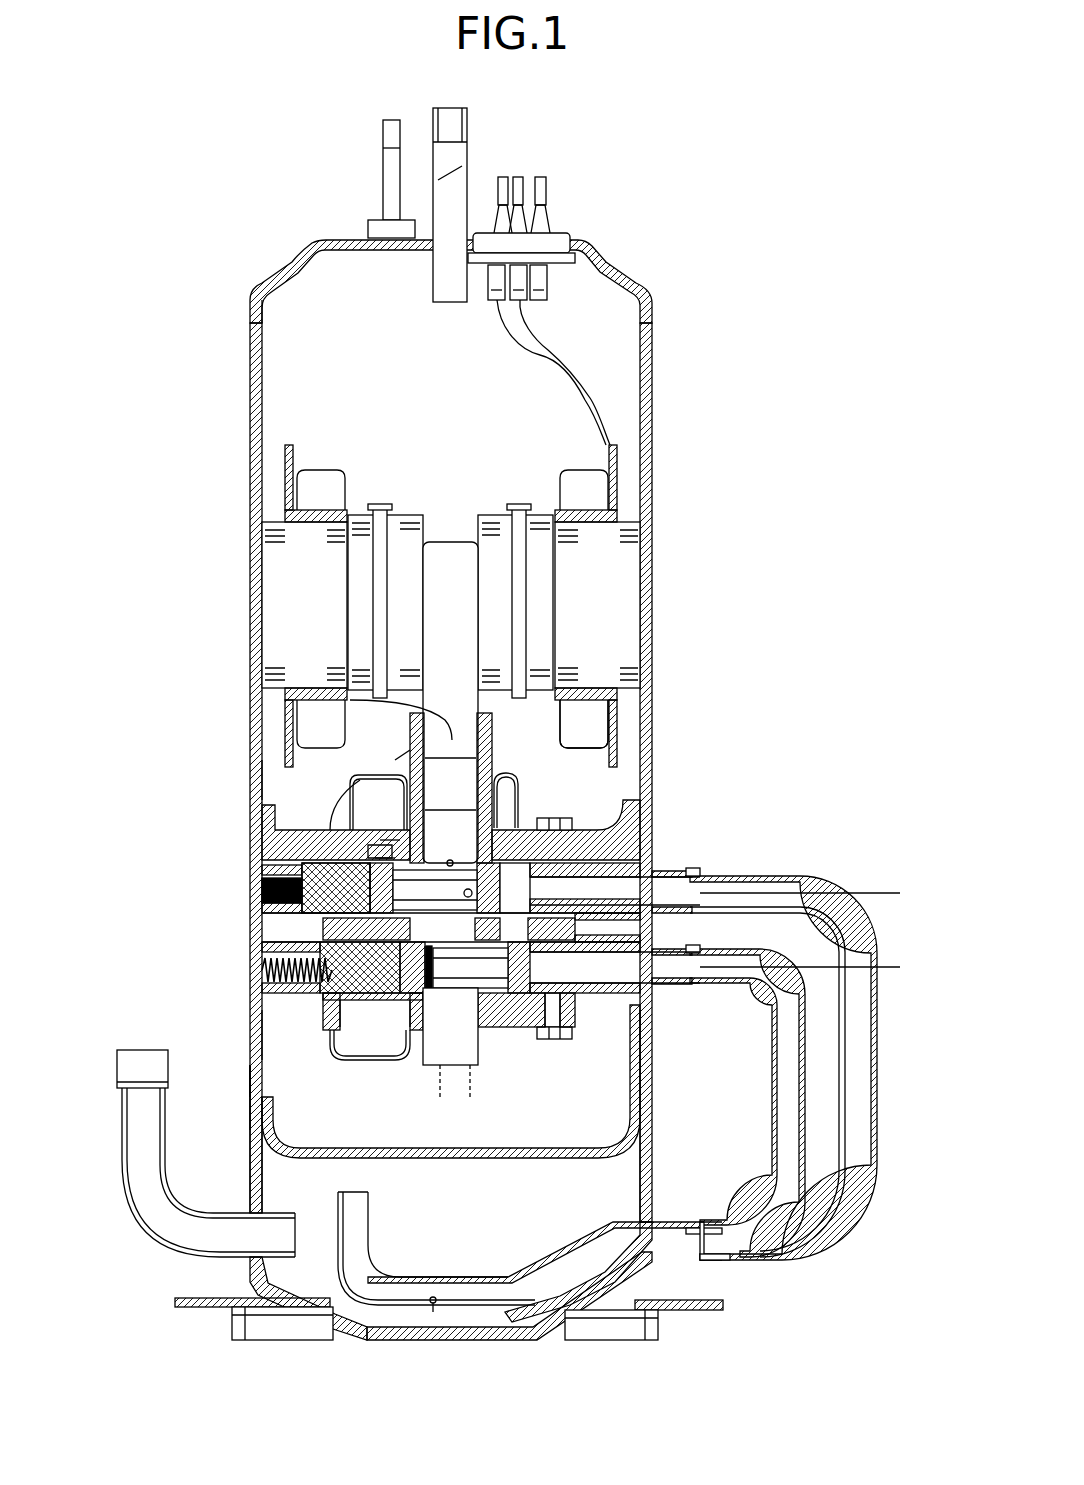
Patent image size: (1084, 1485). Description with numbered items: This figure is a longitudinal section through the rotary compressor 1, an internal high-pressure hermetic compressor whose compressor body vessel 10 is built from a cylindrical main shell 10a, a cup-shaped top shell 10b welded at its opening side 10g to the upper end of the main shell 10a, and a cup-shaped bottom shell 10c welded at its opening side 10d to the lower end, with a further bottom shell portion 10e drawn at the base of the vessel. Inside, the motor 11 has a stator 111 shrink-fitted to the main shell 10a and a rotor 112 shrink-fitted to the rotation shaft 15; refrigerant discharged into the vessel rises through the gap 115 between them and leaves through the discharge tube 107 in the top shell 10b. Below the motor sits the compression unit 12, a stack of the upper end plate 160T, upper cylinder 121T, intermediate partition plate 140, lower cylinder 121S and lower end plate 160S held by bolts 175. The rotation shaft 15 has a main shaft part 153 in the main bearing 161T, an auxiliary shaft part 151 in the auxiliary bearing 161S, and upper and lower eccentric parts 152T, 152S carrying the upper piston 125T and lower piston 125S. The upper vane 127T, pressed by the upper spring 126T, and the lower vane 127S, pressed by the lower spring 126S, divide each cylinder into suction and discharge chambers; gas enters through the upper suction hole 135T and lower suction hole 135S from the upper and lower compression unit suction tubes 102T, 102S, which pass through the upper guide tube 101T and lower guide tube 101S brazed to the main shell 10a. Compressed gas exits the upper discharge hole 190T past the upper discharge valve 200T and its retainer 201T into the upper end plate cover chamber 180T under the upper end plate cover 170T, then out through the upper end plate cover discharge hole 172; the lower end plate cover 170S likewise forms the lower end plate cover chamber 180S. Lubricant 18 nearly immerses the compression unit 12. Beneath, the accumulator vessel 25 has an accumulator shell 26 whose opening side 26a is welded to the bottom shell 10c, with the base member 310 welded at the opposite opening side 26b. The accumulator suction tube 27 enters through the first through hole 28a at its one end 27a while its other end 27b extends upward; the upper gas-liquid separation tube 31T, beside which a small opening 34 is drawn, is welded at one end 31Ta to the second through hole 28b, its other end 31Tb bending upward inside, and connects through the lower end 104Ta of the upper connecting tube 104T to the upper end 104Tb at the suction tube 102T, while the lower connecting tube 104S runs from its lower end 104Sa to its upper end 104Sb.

The rotary compressor 1 is at (574, 108).
The compressor body vessel 10 is at (250, 372).
The top shell 10b is at (318, 240).
The opening side of the top shell 10g is at (273, 325).
The discharge tube 107 is at (468, 125).
The motor 11 is at (276, 566).
The stator 111 is at (262, 540).
The rotor 112 is at (495, 607).
The rotation shaft 15 is at (450, 580).
The gap between the stator and the rotor 115 is at (556, 692).
The main shaft part 153 is at (350, 700).
The main bearing 161T is at (410, 722).
The upper end plate cover discharge hole 172 is at (395, 760).
The main shell 10a is at (262, 760).
The upper end plate cover 170T is at (350, 782).
The upper discharge valve retainer 201T is at (395, 840).
The upper discharge valve 200T is at (375, 850).
The upper discharge hole 190T is at (385, 858).
The upper eccentric part 152T is at (290, 868).
The upper piston 125T is at (330, 880).
The upper spring 126T is at (280, 885).
The upper vane 127T is at (290, 906).
The compression unit 12 is at (262, 893).
The intermediate partition plate 140 is at (340, 930).
The upper end plate cover chamber 180T is at (515, 790).
The bolts 175 is at (552, 818).
The upper end plate 160T is at (612, 853).
The upper cylinder 121T is at (685, 862).
The upper guide tube 101T is at (705, 877).
The upper compression unit suction tube 102T is at (712, 882).
The upper end of the upper connecting tube 104Tb is at (705, 872).
The upper suction hole 135T is at (823, 894).
The upper connecting tube 104T is at (878, 1100).
The lower spring 126S is at (290, 968).
The lower vane 127S is at (300, 995).
The lower piston 125S is at (330, 1000).
The lower eccentric part 152S is at (320, 1005).
The lower end plate cover chamber 180S is at (345, 1040).
The lower end plate cover 170S is at (375, 1062).
The auxiliary bearing 161S is at (425, 1052).
The auxiliary shaft part 151 is at (456, 1060).
The lower cylinder 121S is at (610, 995).
The lower end plate 160S is at (578, 1030).
The lower guide tube 101S is at (695, 952).
The lower compression unit suction tube 102S is at (705, 962).
The lower suction hole 135S is at (823, 967).
The lower connecting tube 104S is at (772, 1130).
The upper end of the lower connecting tube 104Sb is at (700, 988).
The lower end of the lower connecting tube 104Sa is at (692, 1222).
The one end of the upper gas-liquid separation tube 31Ta is at (700, 1272).
The lower end of the upper connecting tube 104Ta is at (775, 1263).
The lubricant 18 is at (640, 1083).
The bottom shell 10c is at (255, 1080).
The opening side of the bottom shell 10d is at (272, 1062).
The bottom plate portion 10e is at (490, 1150).
The opening side of the accumulator shell 26a is at (250, 1115).
The accumulator shell 26 is at (250, 1148).
The opposite opening side 26b is at (370, 1342).
The accumulator vessel 25 is at (182, 1164).
The another end of the accumulator suction tube 27b is at (117, 1075).
The accumulator suction tube 27 is at (135, 1215).
The one end of the accumulator suction tube 27a is at (285, 1213).
The first through hole 28a is at (258, 1278).
The second through hole 28b is at (640, 1280).
The base member 310 is at (193, 1308).
The oil hole 34 is at (433, 1315).
The upper gas-liquid separation tube 31T is at (520, 1335).
The other end of the upper gas-liquid separation tube 31Tb is at (370, 1198).